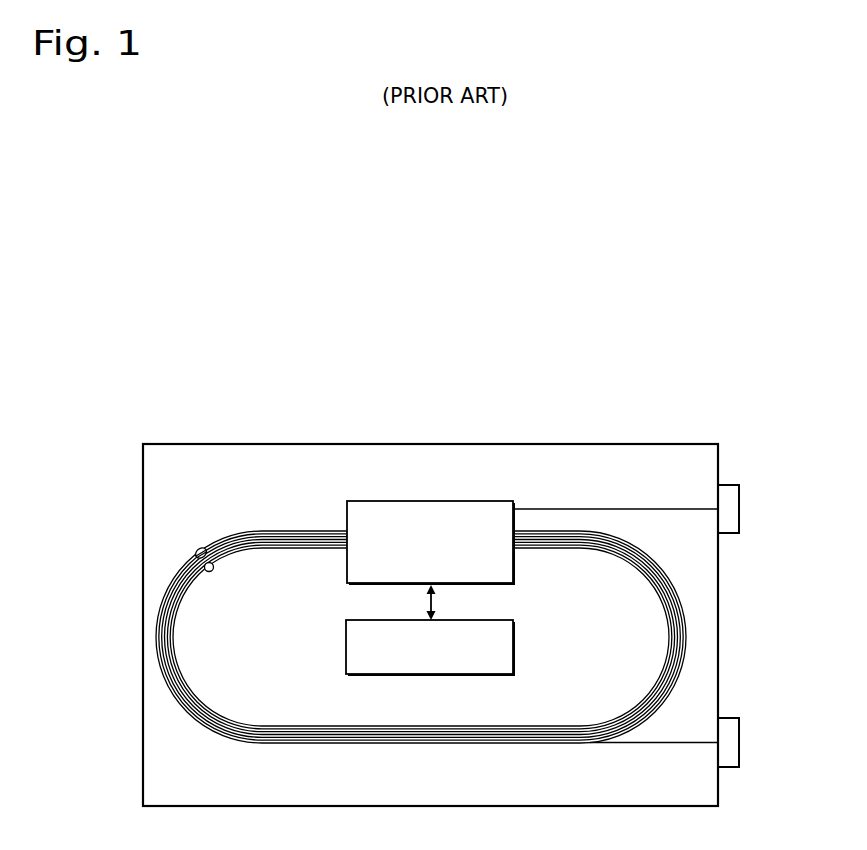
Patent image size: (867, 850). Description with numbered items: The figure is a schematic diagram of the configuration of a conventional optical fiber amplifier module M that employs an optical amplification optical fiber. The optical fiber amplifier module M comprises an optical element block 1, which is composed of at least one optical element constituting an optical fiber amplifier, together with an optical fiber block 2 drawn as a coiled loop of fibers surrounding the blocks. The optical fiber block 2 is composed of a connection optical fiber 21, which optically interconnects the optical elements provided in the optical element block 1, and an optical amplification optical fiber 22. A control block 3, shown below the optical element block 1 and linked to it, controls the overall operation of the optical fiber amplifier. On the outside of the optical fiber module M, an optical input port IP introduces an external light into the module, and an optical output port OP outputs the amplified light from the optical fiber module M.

The optical fiber amplifier module M is at (603, 444).
The optical element block 1 is at (475, 504).
The optical fiber block 2 is at (157, 660).
The connection optical fiber 21 is at (201, 549).
The optical amplification optical fiber 22 is at (211, 571).
The control block 3 is at (508, 655).
The optical input port IP is at (733, 517).
The optical output port OP is at (733, 751).